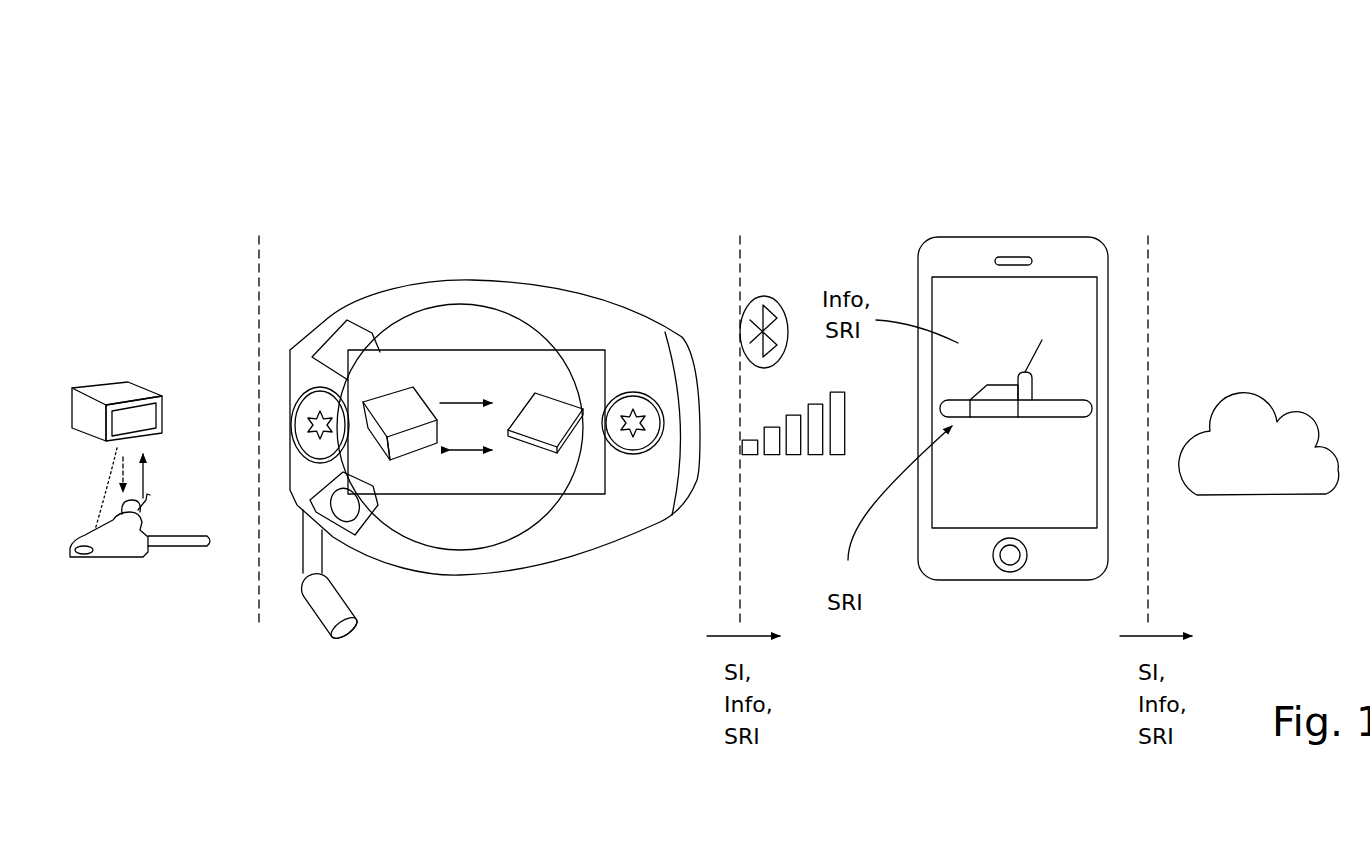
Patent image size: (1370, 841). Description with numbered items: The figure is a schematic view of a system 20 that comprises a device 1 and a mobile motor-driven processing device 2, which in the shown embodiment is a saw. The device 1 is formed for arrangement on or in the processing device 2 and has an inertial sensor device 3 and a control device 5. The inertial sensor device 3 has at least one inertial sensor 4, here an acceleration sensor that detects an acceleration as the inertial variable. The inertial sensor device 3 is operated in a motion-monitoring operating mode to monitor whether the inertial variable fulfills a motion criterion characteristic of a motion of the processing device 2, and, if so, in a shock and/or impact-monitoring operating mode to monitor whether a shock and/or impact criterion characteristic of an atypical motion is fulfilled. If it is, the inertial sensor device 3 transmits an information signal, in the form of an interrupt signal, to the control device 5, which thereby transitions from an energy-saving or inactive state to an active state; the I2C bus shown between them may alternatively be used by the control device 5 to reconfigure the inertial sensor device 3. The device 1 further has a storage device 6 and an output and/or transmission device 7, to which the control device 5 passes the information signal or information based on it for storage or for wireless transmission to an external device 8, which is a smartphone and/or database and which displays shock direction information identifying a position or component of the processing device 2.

The system 20 is at (138, 208).
The mobile motor-driven processing device 2 is at (130, 546).
The device 1 is at (472, 279).
The output and/or transmission device 7 is at (378, 318).
The inertial sensor device 3 is at (400, 452).
The inertial sensor 4 is at (424, 458).
The control device 5 is at (566, 440).
The storage device 6 is at (627, 513).
The external device 8 is at (975, 245).